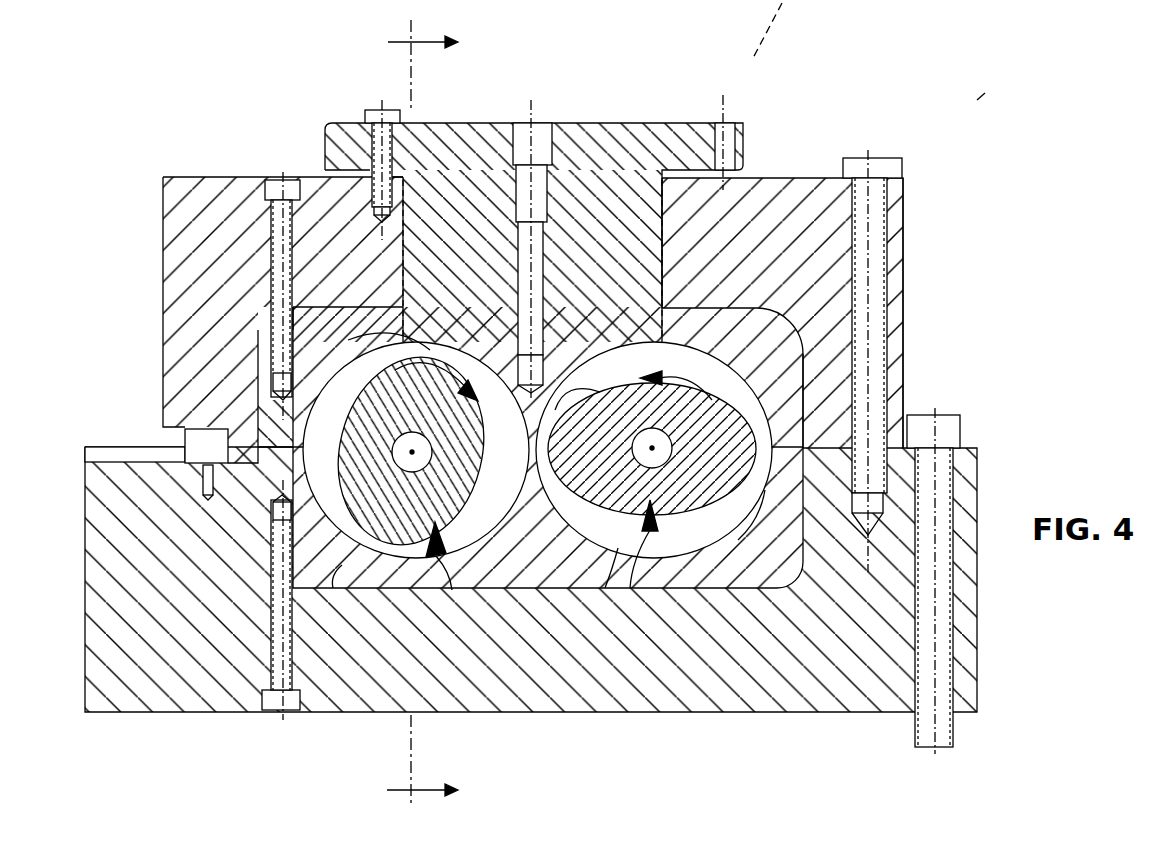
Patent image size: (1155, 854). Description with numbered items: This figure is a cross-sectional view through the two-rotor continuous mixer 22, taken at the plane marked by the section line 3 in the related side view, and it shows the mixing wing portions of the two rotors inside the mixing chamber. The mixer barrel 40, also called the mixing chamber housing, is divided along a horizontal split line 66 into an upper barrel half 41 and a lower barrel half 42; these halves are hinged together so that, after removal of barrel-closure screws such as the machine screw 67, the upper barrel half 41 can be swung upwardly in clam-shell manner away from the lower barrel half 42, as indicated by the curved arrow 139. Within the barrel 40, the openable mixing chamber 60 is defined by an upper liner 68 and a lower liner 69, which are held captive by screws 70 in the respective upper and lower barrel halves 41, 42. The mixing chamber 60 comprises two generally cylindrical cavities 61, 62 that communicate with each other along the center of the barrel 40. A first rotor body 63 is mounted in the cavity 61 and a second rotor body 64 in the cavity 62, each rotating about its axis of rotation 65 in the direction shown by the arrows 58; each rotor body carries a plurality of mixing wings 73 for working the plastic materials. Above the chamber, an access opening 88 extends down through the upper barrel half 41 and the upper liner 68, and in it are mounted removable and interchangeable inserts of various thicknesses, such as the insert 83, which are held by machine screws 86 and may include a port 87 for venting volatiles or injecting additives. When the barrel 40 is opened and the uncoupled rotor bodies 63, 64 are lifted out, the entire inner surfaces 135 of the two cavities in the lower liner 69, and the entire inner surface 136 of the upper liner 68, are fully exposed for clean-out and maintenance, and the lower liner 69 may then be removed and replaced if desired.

The section line 3— 3 is at (433, 414).
The two-rotor continuous mixer 22 is at (990, 90).
The mixer barrel 40 is at (915, 337).
The upper barrel half 41 is at (813, 190).
The lower barrel half 42 is at (773, 680).
The arrows 58 is at (455, 362).
The mixing chamber 60 is at (537, 493).
The first cylindrical cavity 61 is at (488, 512).
The second cylindrical cavity 62 is at (590, 528).
The first rotor body 63 is at (430, 560).
The second rotor body 64 is at (633, 540).
The axes of rotation 65 is at (412, 452).
The horizontal split line 66 is at (237, 425).
The machine screw 67 is at (882, 258).
The upper liner 68 is at (318, 378).
The lower liner 69 is at (703, 548).
The screws 70 is at (283, 185).
The mixing wings 73 is at (400, 345).
The removable insert 83 is at (628, 140).
The machine screws 86 is at (382, 110).
The port 87 is at (528, 150).
The access opening 88 is at (655, 243).
The inner surfaces of the cavities 135 is at (336, 588).
The inner surface of the upper liner 136 is at (385, 300).
The curved arrow 139 is at (777, 15).